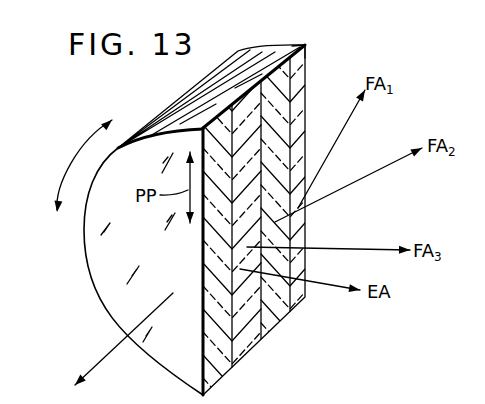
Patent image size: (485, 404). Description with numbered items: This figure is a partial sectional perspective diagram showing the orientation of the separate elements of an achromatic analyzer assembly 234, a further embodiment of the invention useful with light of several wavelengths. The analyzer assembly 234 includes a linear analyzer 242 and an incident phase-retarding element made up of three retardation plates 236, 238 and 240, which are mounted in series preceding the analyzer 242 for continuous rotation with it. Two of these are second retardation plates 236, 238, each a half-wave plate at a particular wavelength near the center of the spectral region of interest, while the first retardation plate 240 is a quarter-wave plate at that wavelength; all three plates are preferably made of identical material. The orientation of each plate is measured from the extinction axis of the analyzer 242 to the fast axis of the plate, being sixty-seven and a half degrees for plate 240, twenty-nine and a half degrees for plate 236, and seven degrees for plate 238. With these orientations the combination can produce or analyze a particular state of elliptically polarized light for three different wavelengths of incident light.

The analyzer assembly 234 is at (93, 298).
The second retardation plate 236 is at (269, 63).
The second retardation plate 238 is at (235, 88).
The first retardation plate 240 is at (286, 48).
The linear analyzer 242 is at (165, 130).